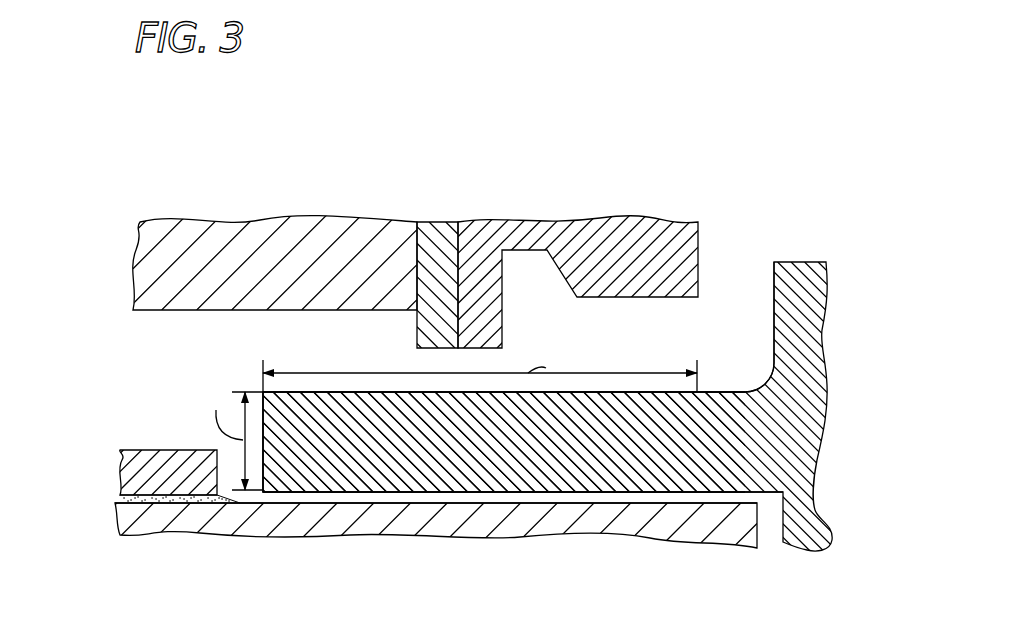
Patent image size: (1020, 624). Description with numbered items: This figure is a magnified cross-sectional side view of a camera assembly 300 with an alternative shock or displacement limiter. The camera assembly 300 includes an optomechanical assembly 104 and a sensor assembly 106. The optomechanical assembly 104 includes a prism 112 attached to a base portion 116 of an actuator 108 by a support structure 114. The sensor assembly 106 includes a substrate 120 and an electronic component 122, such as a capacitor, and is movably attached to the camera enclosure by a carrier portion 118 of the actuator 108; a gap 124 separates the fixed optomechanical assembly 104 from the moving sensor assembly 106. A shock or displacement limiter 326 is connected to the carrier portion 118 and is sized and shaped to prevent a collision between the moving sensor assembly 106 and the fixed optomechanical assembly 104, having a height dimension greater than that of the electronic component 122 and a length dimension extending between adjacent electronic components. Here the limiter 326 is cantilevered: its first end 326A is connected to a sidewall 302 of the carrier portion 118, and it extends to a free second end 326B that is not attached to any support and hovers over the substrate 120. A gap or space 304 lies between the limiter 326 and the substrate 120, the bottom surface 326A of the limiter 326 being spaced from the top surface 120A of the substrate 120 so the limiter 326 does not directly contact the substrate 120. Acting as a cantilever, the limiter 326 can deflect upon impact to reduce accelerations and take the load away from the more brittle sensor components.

The camera assembly 300 is at (762, 155).
The optomechanical assembly 104 is at (127, 258).
The sensor assembly 106 is at (102, 477).
The actuator 108 is at (828, 255).
The prism 112 is at (270, 248).
The support structure 114 is at (440, 240).
The base portion 116 is at (699, 247).
The carrier portion 118 is at (807, 403).
The substrate 120 is at (350, 520).
The top surface 120A is at (298, 503).
The electronic component 122 is at (163, 450).
The gap 124 is at (163, 365).
The sidewall 302 is at (774, 293).
The gap or space 304 is at (405, 503).
The shock or displacement limiter 326 is at (500, 450).
The first end 326A is at (725, 393).
The second end 326B is at (292, 392).